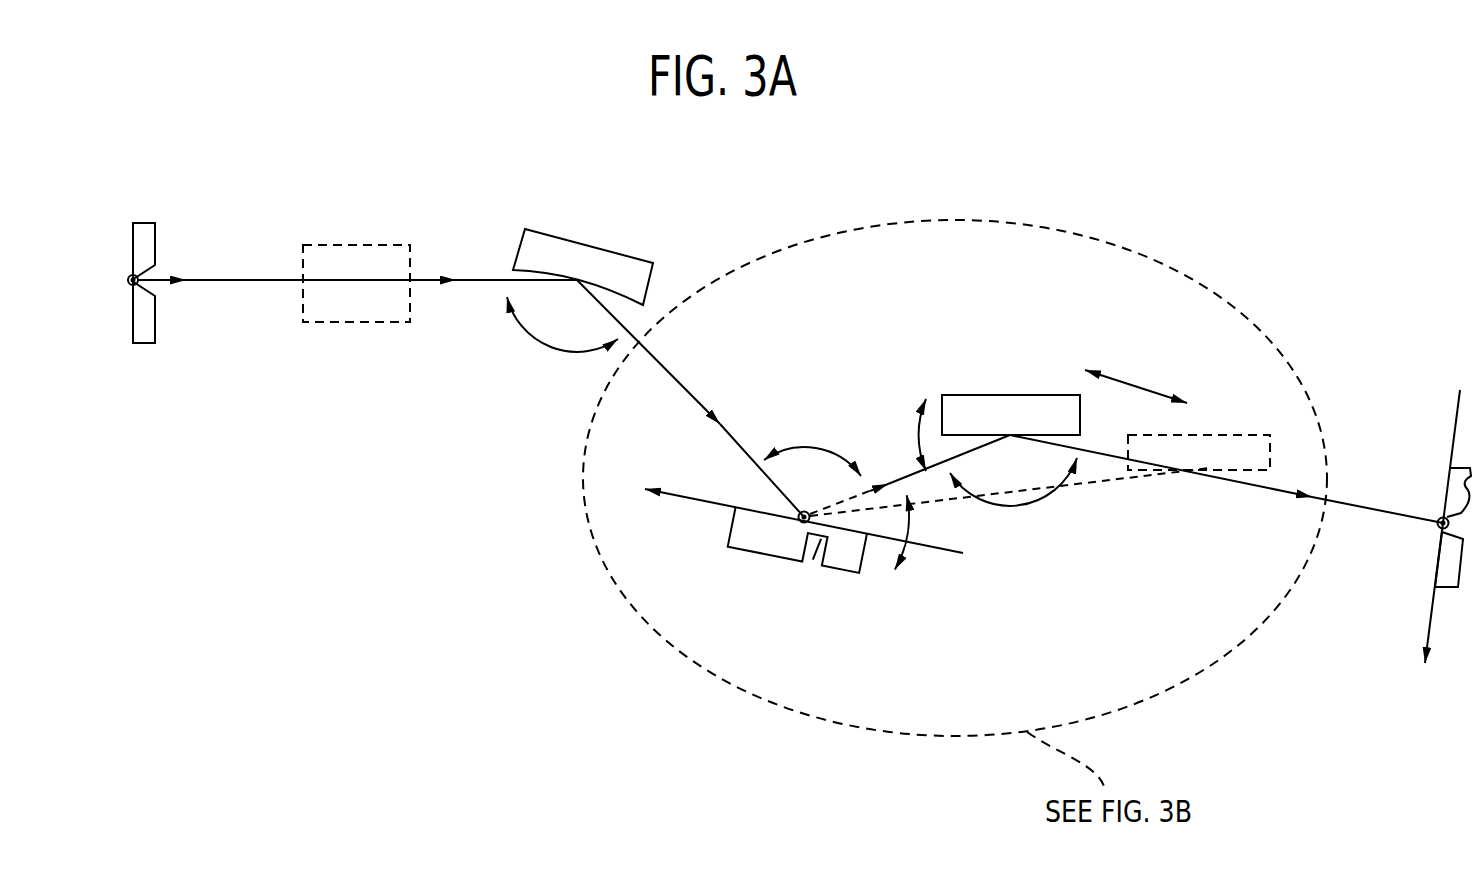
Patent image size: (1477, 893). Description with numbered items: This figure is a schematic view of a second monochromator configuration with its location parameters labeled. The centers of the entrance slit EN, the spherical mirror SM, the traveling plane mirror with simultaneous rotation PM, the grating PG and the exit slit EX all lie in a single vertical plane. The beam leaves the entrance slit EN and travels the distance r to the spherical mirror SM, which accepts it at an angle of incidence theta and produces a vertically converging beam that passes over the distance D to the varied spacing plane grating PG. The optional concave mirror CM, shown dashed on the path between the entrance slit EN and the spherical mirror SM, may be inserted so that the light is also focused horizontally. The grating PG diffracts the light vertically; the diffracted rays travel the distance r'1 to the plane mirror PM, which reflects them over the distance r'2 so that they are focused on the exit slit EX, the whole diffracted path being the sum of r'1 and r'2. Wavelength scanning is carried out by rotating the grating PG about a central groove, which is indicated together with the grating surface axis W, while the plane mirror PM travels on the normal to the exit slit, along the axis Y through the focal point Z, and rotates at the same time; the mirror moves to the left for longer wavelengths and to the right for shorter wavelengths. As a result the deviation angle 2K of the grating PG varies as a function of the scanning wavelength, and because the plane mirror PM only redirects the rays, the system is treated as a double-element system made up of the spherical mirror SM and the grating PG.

The entrance slit EN is at (163, 338).
The concave mirror CM is at (352, 337).
The spherical mirror SM is at (650, 253).
The traveling plane mirror PM is at (1013, 388).
The varied spacing plane grating PG is at (790, 570).
The exit slit EX is at (1418, 507).
The distance EN-to-SM r is at (357, 259).
The distance SM-to-PG D is at (690, 398).
The distance PG-to-PM r'1 is at (910, 471).
The distance PM-to-EX r'2 is at (1226, 492).
The grating surface axis W is at (785, 512).
The exit slit axis Y is at (1436, 546).
The exit slit focal point Z is at (1431, 544).
The deviation angle of the grating 2K is at (812, 438).